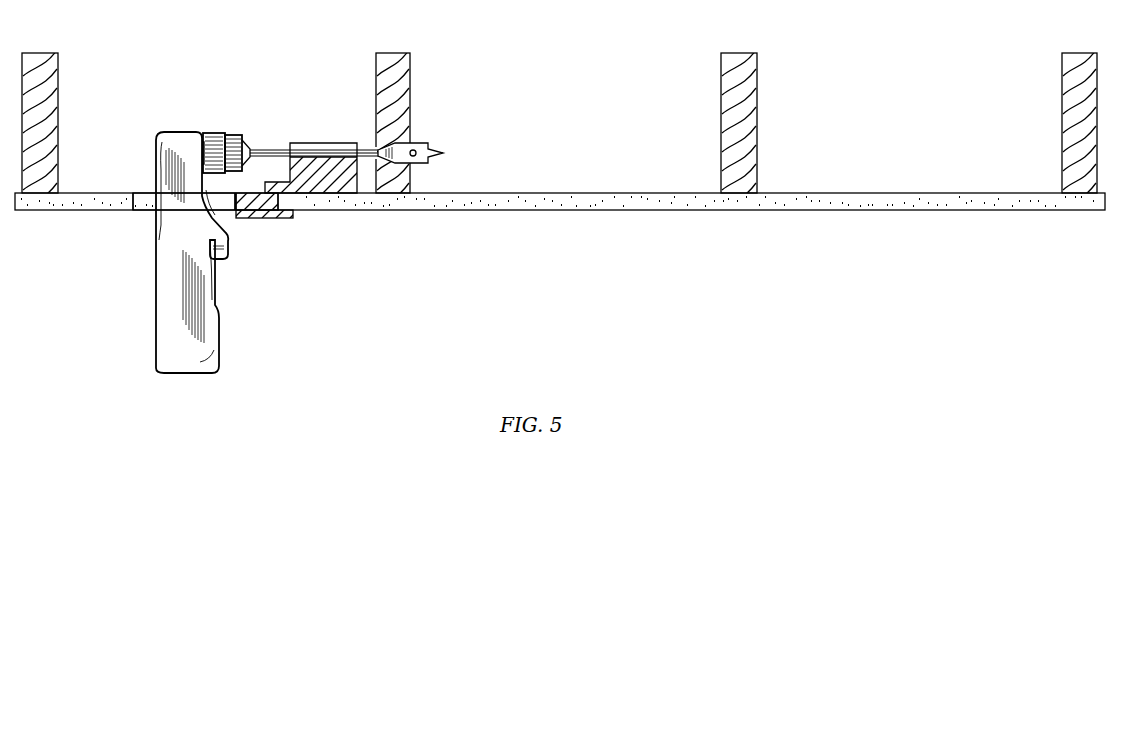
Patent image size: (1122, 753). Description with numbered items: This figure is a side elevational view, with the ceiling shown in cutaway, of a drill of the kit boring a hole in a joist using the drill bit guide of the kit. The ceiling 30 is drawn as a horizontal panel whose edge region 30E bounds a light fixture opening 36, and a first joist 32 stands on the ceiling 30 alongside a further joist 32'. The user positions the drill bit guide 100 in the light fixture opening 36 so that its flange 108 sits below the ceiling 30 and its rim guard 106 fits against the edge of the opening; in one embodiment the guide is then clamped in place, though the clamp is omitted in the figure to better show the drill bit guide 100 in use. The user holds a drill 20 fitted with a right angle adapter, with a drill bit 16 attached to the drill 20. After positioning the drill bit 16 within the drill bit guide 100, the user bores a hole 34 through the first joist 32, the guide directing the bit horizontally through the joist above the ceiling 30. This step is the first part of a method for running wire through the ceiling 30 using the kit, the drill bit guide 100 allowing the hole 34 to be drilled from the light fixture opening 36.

The drill bit 16 is at (418, 143).
The drill with right angle adaptor 20 is at (182, 135).
The ceiling 30 is at (715, 200).
The panel edge 30E is at (277, 200).
The first joist 32 is at (414, 112).
The stud 32' is at (763, 105).
The hole 34 is at (375, 150).
The light fixture opening 36 is at (145, 200).
The drill bit guide 100 is at (335, 168).
The rim guard 106 is at (240, 213).
The flange 108 is at (280, 218).